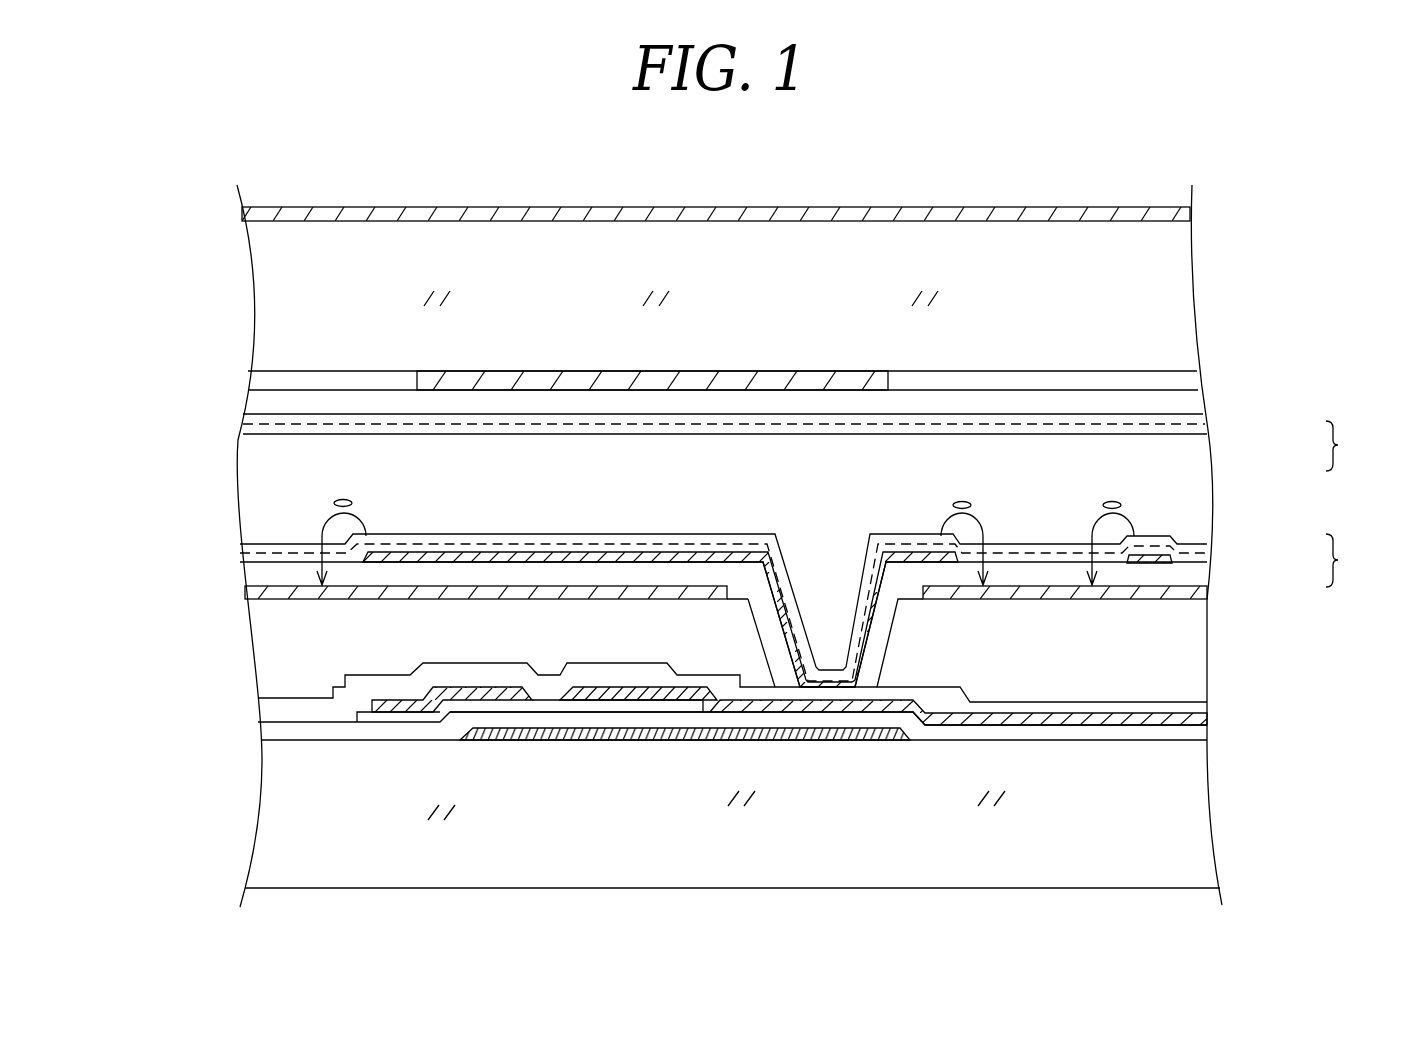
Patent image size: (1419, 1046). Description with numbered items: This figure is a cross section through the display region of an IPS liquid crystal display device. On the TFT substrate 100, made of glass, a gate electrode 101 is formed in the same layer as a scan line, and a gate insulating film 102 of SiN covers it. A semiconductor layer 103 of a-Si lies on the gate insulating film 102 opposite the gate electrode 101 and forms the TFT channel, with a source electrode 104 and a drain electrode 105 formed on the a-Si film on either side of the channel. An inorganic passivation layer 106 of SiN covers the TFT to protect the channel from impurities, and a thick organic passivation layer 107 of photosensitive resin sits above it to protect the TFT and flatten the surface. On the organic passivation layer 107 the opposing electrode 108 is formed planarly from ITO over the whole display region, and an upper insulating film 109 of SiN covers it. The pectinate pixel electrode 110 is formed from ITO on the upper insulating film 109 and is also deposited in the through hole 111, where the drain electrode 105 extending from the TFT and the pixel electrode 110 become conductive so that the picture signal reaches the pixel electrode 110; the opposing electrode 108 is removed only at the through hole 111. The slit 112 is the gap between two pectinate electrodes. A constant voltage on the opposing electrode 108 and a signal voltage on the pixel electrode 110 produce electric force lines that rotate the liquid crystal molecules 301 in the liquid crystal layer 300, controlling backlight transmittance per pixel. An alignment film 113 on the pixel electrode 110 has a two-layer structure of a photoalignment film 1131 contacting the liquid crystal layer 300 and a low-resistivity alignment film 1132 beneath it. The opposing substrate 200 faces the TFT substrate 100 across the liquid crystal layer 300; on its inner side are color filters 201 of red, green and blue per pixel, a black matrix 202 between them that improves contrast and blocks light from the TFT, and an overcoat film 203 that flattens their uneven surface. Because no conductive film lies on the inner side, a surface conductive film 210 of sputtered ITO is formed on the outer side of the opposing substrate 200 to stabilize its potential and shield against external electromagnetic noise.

The TFT substrate 100 is at (370, 858).
The gate electrode 101 is at (548, 740).
The gate insulating film 102 is at (263, 732).
The semiconductor layer 103 is at (637, 700).
The source electrode 104 is at (482, 700).
The drain electrode 105 is at (698, 705).
The inorganic passivation layer 106 is at (258, 710).
The organic passivation layer 107 is at (260, 642).
The opposing electrode 108 is at (245, 588).
The upper insulating film 109 is at (253, 575).
The pixel electrode 110 is at (668, 533).
The through hole 111 is at (820, 713).
The slit 112 is at (976, 526).
The alignment film 113 is at (813, 554).
The photoalignment film 1131 is at (1207, 430).
The low-resistivity alignment film 1132 is at (1207, 420).
The opposing substrate 200 is at (1160, 295).
The color filters 201 is at (1187, 380).
The black matrix 202 is at (810, 378).
The overcoat film 203 is at (1182, 402).
The surface conductive film 210 is at (1033, 206).
The liquid crystal layer 300 is at (1190, 507).
The liquid crystal molecules 301 is at (1061, 455).